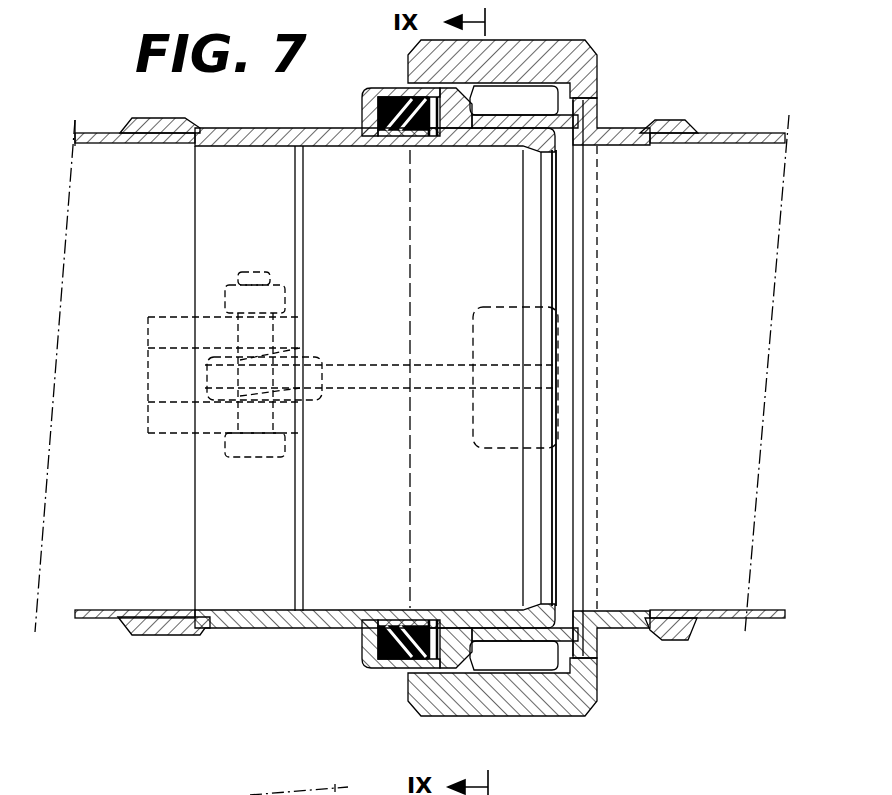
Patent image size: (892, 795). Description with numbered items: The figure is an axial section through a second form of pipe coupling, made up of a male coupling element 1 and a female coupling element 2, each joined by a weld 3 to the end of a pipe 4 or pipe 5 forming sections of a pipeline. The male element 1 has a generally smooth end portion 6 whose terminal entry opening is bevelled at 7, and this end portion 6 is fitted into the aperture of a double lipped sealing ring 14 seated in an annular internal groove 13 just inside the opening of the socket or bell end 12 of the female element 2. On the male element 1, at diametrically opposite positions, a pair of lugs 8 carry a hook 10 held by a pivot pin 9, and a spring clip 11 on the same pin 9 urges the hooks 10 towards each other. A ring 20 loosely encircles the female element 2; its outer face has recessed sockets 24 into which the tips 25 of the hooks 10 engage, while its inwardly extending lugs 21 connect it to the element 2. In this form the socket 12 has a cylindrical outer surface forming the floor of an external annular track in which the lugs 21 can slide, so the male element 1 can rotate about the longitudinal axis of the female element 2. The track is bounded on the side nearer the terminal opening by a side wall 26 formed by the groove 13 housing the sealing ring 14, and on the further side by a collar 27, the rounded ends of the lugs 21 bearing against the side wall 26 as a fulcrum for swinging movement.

The male coupling element 1 is at (249, 136).
The female coupling element 2 is at (640, 133).
The weld 3 is at (127, 136).
The pipe 4 is at (115, 376).
The pipe 5 is at (719, 373).
The end portion 6 is at (482, 133).
The bevel 7 is at (541, 152).
The lugs 8 is at (170, 345).
The pivot pin 9 is at (258, 272).
The hook 10 is at (372, 392).
The spring clip 11 is at (330, 356).
The socket 12 is at (597, 668).
The internal groove 13 is at (427, 667).
The sealing ring 14 is at (383, 660).
The ring 20 is at (583, 63).
The lugs 21 is at (540, 753).
The recessed sockets 24 is at (488, 338).
The tips 25 is at (530, 117).
The side wall 26 is at (478, 100).
The collar 27 is at (587, 113).